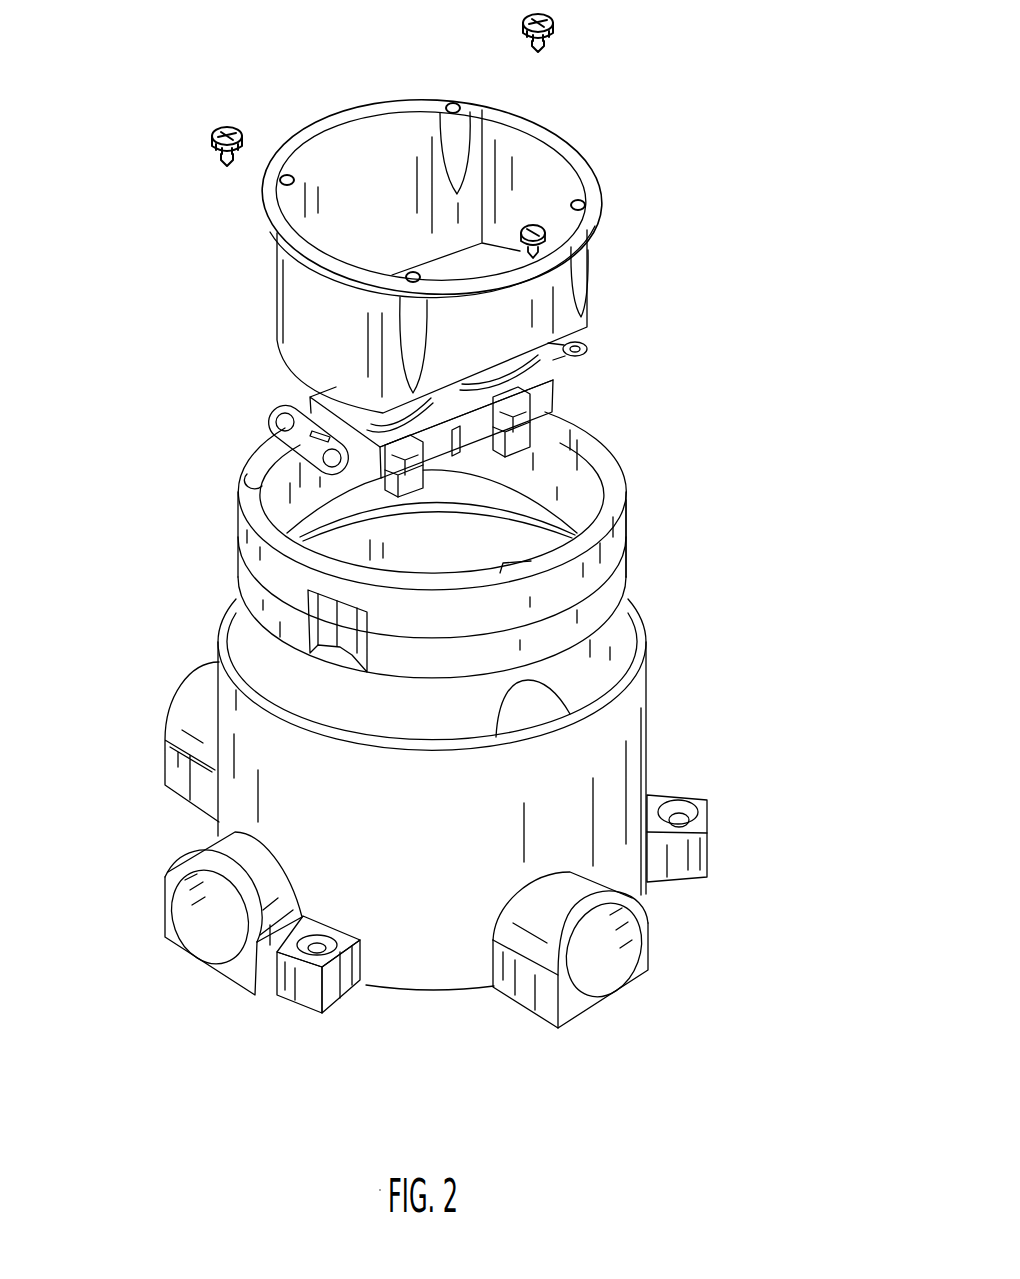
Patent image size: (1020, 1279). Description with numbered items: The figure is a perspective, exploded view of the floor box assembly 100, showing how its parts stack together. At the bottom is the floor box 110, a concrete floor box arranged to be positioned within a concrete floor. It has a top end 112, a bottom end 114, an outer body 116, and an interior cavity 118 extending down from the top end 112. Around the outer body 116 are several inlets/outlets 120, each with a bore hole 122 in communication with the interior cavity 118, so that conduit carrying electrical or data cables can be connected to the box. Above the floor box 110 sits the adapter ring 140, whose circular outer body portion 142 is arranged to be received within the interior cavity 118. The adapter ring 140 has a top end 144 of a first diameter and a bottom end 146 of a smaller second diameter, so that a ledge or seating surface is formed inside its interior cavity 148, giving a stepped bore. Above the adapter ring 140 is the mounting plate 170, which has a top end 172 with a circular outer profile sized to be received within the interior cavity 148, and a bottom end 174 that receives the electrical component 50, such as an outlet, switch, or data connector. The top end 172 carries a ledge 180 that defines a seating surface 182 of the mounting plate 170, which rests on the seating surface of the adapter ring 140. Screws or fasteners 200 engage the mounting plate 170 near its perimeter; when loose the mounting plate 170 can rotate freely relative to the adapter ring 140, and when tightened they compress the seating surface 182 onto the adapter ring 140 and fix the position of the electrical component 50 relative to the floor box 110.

The electrical component 50 is at (308, 400).
The floor box assembly 100 is at (176, 59).
The floor box 110 is at (612, 786).
The top end 112 is at (214, 628).
The bottom end 114 is at (428, 976).
The outer body 116 is at (600, 832).
The interior cavity 118 is at (239, 608).
The inlets/outlets 120 is at (175, 720).
The bore hole 122 is at (192, 934).
The adapter ring 140 is at (628, 516).
The circular outer profile or body portion 142 is at (432, 554).
The top end 144 is at (604, 442).
The bottom end 146 is at (622, 604).
The interior cavity 148 is at (299, 479).
The mounting plate 170 is at (580, 276).
The top end 172 is at (570, 138).
The bottom end 174 is at (587, 322).
The ledge 180 is at (431, 196).
The seating surface 182 is at (432, 192).
The screws or fasteners 200 is at (223, 130).